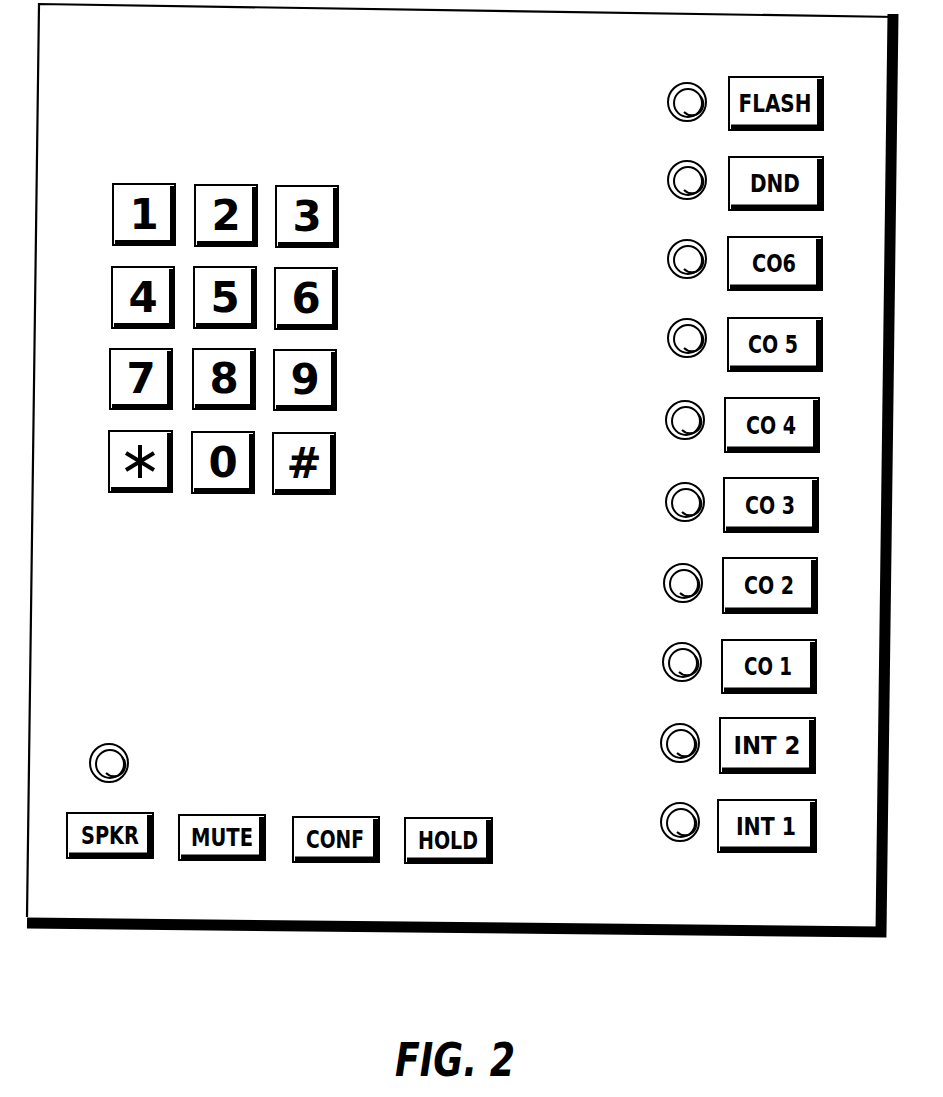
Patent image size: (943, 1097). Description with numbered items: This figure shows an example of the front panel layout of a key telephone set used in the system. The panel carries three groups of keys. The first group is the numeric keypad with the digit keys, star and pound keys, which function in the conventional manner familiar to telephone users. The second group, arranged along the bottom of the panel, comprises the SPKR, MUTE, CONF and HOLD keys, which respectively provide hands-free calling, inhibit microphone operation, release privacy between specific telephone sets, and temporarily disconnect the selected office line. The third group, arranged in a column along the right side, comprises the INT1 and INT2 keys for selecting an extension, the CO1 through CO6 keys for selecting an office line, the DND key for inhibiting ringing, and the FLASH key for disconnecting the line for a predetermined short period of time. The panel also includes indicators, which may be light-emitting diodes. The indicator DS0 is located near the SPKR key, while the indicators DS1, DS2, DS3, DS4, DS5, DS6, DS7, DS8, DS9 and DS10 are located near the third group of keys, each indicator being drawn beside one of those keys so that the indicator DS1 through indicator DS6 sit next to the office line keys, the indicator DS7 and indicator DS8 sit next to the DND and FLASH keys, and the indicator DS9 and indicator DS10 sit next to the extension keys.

The indicator DS0 is at (126, 757).
The indicator DS1 is at (665, 653).
The indicator DS2 is at (666, 572).
The indicator DS3 is at (667, 493).
The indicator DS4 is at (667, 413).
The indicator DS5 is at (669, 334).
The indicator DS6 is at (669, 253).
The indicator DS7 is at (671, 172).
The indicator DS8 is at (671, 92).
The indicator DS9 is at (664, 815).
The indicator DS10 is at (664, 733).